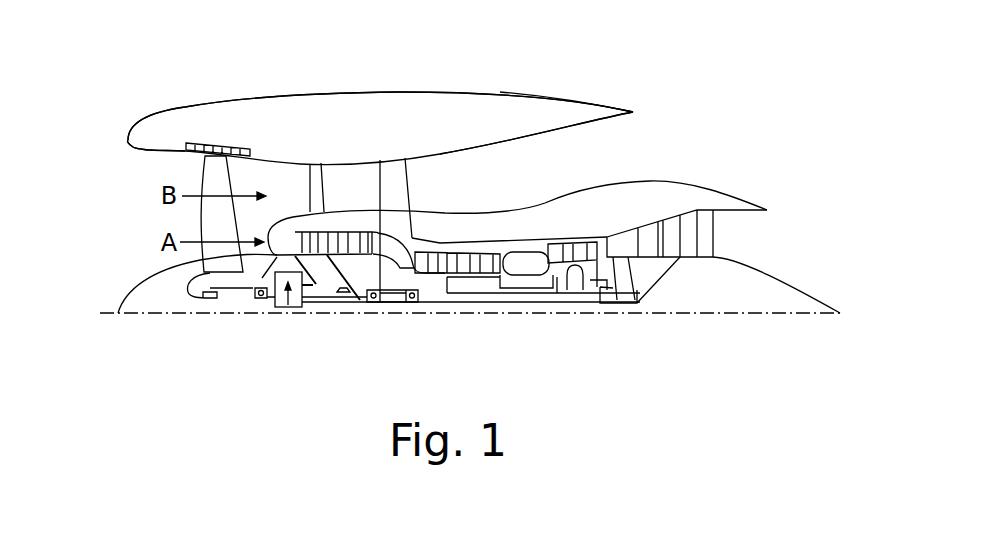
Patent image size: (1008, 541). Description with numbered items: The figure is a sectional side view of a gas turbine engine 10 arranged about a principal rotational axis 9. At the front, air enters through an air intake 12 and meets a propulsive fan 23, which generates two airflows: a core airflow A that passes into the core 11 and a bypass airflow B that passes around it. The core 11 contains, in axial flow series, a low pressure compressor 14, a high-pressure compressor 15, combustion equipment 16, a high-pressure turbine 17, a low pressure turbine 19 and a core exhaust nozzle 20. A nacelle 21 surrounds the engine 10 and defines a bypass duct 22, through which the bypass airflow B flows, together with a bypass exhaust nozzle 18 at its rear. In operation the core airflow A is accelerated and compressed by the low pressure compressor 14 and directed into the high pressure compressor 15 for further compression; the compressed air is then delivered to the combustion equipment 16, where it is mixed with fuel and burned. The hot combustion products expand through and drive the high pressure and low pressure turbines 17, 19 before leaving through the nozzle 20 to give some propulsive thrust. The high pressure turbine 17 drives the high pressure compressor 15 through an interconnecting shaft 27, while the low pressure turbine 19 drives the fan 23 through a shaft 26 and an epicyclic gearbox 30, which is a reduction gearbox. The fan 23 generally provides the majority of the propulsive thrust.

The principal rotational axis 9 is at (737, 314).
The gas turbine engine 10 is at (175, 104).
The core 11 is at (539, 220).
The air intake 12 is at (132, 166).
The low pressure compressor 14 is at (345, 240).
The high-pressure compressor 15 is at (467, 258).
The combustion equipment 16 is at (525, 263).
The high-pressure turbine 17 is at (585, 245).
The bypass exhaust nozzle 18 is at (728, 108).
The low pressure turbine 19 is at (688, 252).
The core exhaust nozzle 20 is at (777, 243).
The nacelle 21 is at (392, 107).
The bypass duct 22 is at (627, 149).
The propulsive fan 23 is at (208, 232).
The shaft 26 is at (433, 302).
The interconnecting shaft 27 is at (490, 302).
The epicyclic gearbox 30 is at (289, 307).